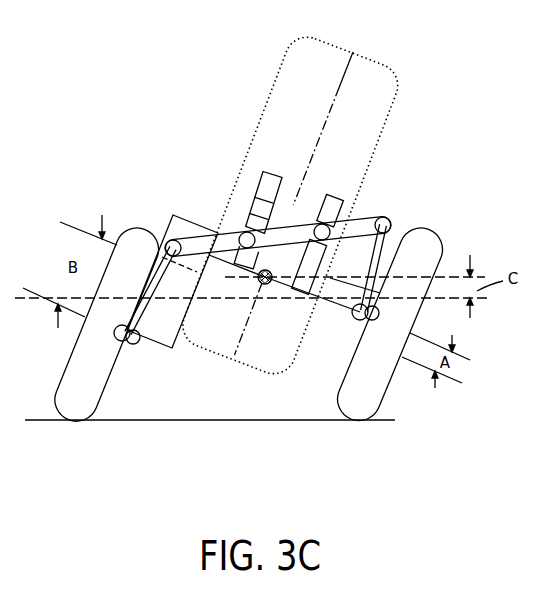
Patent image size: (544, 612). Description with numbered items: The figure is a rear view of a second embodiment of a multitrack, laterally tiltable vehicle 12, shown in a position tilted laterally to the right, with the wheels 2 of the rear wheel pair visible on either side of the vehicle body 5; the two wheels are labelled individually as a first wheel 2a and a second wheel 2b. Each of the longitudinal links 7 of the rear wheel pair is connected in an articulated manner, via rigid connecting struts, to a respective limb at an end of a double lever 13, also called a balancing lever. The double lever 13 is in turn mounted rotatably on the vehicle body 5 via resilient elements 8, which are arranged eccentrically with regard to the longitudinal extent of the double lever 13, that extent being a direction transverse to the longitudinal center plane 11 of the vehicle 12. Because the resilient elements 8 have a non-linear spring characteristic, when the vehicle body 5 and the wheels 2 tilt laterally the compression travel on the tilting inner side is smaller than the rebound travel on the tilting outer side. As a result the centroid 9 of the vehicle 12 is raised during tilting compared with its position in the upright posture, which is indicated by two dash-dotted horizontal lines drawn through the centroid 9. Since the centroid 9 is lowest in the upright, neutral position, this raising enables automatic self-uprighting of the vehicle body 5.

The wheel 2 is at (243, 355).
The right wheel 2a is at (351, 430).
The left wheel 2b is at (70, 429).
The vehicle body 5 is at (275, 98).
The longitudinal link 7 is at (162, 337).
The resilient element 8 is at (266, 186).
The centroid 9 is at (266, 285).
The longitudinal center plane 11 is at (342, 82).
The multitrack, laterally tiltable vehicle 12 is at (256, 31).
The double lever 13 is at (200, 247).